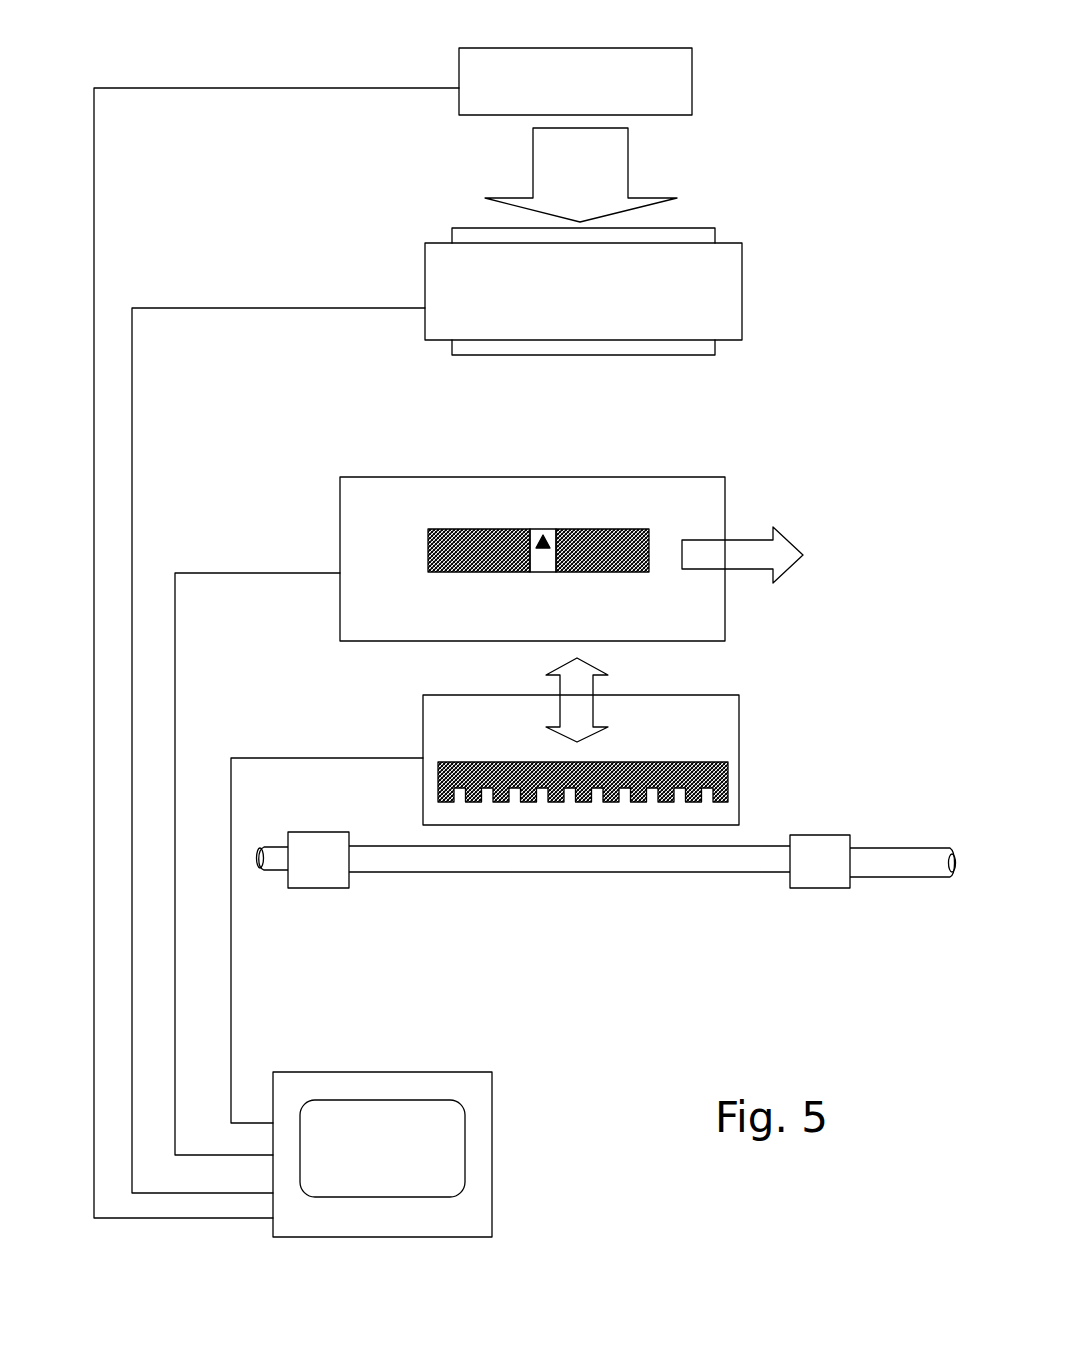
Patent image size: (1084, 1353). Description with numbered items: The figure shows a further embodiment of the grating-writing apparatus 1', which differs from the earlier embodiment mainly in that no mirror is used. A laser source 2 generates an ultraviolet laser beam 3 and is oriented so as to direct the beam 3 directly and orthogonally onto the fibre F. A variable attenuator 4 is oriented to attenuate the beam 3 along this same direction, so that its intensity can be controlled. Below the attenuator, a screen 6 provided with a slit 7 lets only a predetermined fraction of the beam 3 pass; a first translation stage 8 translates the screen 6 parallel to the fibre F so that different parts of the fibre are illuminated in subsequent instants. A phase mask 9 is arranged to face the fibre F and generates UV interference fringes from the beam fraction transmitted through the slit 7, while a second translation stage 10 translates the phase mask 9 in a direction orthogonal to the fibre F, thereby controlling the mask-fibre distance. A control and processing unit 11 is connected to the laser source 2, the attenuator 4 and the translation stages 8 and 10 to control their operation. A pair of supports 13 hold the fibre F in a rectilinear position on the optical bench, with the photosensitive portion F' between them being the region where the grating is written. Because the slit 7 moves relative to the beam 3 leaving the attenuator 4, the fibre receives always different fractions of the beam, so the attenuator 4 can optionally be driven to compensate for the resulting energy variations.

The apparatus 1' is at (525, 618).
The laser source 2 is at (483, 69).
The laser beam 3 is at (552, 152).
The variable attenuator 4 is at (707, 296).
The screen 6 is at (633, 531).
The slit 7 is at (519, 531).
The first translation stage 8 is at (363, 487).
The phase mask 9 is at (710, 763).
The second translation stage 10 is at (433, 710).
The control and processing unit 11 is at (482, 1153).
The supports 13 is at (330, 878).
The fibre F is at (606, 913).
The photosensitive portion of the fibre F' is at (569, 914).